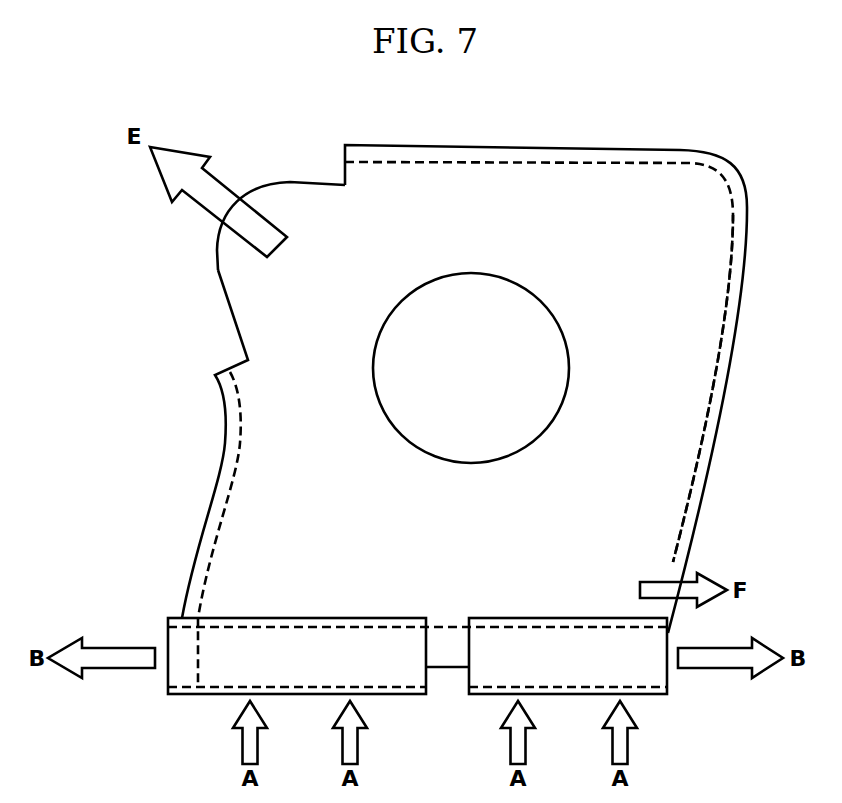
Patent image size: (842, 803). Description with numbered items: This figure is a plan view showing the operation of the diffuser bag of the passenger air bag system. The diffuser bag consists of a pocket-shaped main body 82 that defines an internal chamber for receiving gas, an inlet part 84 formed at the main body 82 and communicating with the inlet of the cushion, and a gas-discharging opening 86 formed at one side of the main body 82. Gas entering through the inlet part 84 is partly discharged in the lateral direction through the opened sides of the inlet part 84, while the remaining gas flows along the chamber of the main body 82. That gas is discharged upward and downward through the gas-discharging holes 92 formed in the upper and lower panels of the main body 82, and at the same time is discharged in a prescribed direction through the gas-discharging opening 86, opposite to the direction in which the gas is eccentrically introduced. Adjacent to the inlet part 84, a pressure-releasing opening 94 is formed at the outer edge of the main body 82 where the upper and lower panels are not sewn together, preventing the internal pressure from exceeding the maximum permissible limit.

The main body 82 is at (677, 188).
The inlet part 84 is at (448, 647).
The gas-discharging opening 86 is at (218, 264).
The gas-discharging hole 92 is at (543, 380).
The pressure-releasing opening 94 is at (678, 564).